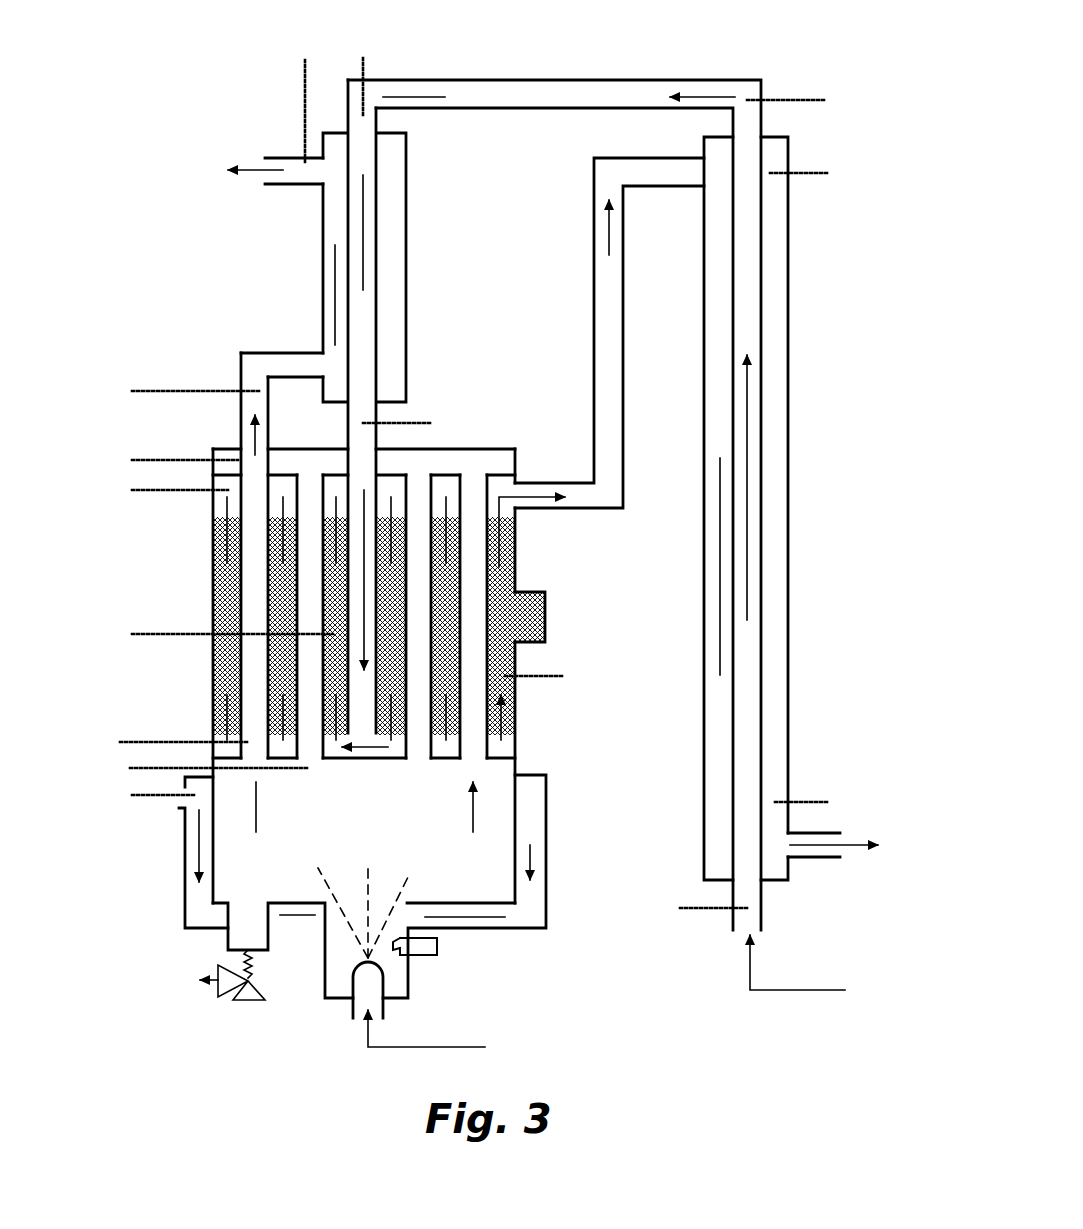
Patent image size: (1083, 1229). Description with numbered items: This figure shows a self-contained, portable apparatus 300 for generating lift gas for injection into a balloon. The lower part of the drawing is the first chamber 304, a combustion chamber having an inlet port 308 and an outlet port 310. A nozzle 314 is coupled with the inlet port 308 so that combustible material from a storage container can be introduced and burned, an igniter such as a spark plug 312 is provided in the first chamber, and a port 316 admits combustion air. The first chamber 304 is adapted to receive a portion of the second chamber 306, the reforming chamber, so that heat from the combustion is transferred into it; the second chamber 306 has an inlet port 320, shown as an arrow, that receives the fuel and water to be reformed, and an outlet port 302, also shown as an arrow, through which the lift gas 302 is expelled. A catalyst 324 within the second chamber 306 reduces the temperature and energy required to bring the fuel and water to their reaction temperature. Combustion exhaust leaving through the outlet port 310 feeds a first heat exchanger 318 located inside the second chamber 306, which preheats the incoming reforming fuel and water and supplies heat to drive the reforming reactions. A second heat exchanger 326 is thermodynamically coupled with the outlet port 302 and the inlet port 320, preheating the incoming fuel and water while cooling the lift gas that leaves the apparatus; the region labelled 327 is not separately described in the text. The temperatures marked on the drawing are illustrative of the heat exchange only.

The apparatus 300 is at (767, 48).
The outlet port 302 is at (848, 848).
The first chamber 304 is at (265, 865).
The second chamber 306 is at (440, 484).
The inlet port 308 is at (368, 982).
The outlet port 310 is at (272, 160).
The spark plug 312 is at (437, 947).
The nozzle 314 is at (367, 958).
The port 316 is at (182, 804).
The first heat exchanger 318 is at (408, 282).
The inlet port 320 is at (764, 943).
The catalyst 324 is at (502, 578).
The second heat exchanger 326 is at (790, 382).
The catalyst bulge 327 is at (532, 617).